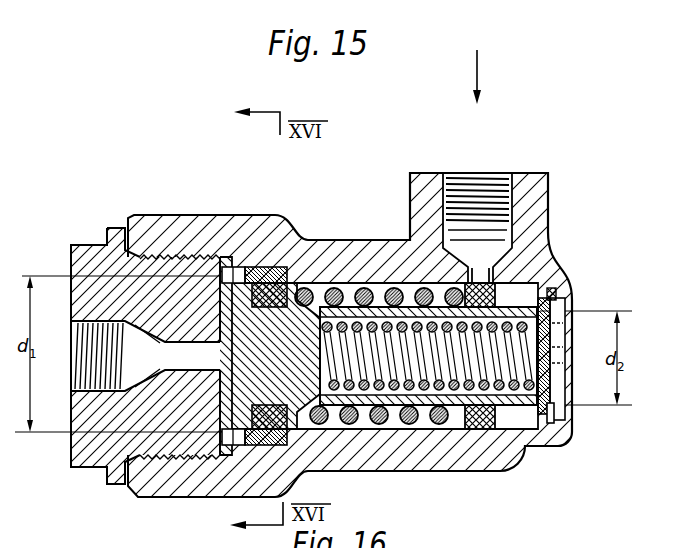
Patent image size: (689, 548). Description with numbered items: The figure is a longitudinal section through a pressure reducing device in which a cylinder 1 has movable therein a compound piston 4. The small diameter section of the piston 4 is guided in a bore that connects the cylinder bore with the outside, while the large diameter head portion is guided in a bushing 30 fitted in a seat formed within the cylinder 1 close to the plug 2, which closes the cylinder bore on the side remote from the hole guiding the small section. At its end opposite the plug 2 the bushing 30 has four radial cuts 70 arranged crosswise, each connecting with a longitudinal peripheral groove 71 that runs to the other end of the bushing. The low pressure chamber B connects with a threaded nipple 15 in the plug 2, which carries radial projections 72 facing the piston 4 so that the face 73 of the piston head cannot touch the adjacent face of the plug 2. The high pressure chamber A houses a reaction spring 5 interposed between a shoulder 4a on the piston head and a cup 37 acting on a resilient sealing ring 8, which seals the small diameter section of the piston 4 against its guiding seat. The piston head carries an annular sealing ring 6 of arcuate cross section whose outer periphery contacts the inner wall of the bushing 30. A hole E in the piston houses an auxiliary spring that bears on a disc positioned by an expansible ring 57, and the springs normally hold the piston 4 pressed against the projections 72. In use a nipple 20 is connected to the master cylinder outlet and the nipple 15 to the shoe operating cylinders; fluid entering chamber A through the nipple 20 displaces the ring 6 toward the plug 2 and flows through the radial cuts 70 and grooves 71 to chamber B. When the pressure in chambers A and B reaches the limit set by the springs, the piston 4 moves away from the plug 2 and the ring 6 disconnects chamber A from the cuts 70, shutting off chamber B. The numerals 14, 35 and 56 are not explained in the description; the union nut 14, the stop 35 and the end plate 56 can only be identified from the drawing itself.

The cylinder 1 is at (297, 247).
The plug 2 is at (97, 272).
The compound piston 4 is at (336, 397).
The shoulder 4a is at (308, 390).
The reaction spring 5 is at (340, 292).
The sealing ring 6 is at (233, 270).
The resilient sealing ring 8 is at (497, 297).
The union nut 14 is at (126, 246).
The threaded nipple 15 is at (90, 374).
The nipple 20 is at (540, 178).
The bushing 30 is at (285, 270).
The stop 35 is at (522, 432).
The cup 37 is at (478, 430).
The end plate 56 is at (548, 352).
The expansible ring 57 is at (553, 410).
The radial cuts 70 is at (330, 283).
The longitudinal peripheral groove 71 is at (258, 452).
The radial projections 72 is at (227, 313).
The face 73 is at (222, 402).
The high pressure chamber A is at (448, 427).
The low pressure chamber B is at (238, 285).
The hole E is at (394, 404).